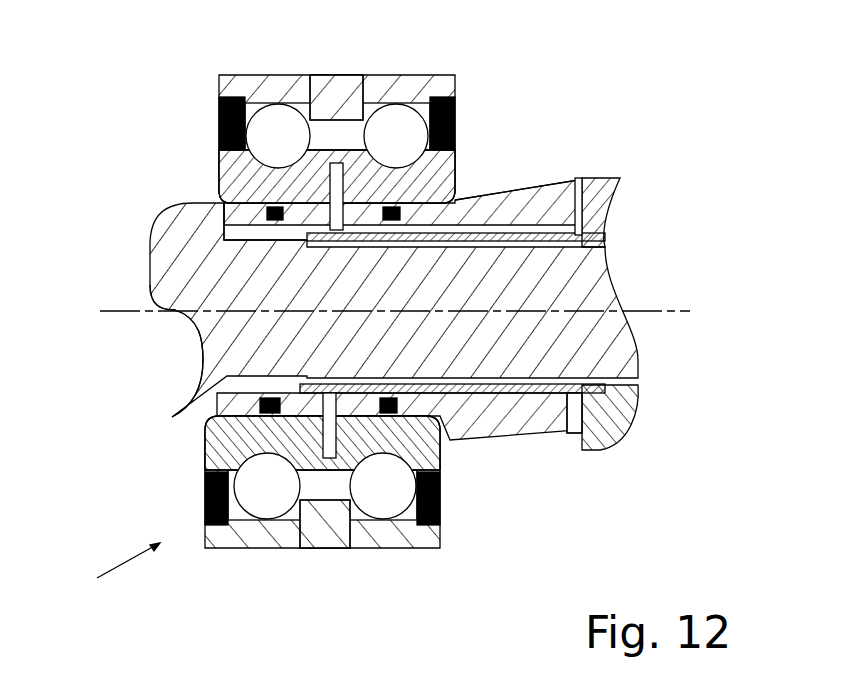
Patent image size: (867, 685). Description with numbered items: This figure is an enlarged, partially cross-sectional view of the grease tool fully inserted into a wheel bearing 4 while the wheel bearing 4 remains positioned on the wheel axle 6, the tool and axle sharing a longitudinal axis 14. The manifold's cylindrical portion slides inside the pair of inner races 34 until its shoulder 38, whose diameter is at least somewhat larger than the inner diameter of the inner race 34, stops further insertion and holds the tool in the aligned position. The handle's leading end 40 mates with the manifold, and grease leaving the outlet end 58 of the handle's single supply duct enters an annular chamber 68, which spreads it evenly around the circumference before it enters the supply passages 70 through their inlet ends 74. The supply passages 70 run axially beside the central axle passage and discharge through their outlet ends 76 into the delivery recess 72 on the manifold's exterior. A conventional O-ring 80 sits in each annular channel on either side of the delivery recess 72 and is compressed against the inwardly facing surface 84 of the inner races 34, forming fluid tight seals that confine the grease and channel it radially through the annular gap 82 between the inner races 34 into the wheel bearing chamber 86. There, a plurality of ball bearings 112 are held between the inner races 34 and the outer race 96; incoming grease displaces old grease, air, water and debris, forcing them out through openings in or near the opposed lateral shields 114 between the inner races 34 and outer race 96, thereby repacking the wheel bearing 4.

The wheel bearing 4 is at (110, 571).
The wheel axle 6 is at (597, 345).
The longitudinal axis 14 is at (123, 310).
The inner race 34 is at (219, 160).
The shoulder 38 is at (460, 192).
The leading end 40 is at (617, 423).
The outlet end 58 is at (607, 215).
The annular chamber 68 is at (587, 210).
The supply passages 70 is at (497, 393).
The delivery recess 72 is at (353, 452).
The inlet ends 74 is at (566, 400).
The outlet ends 76 is at (343, 150).
The O-ring 80 is at (445, 197).
The annular gap 82 is at (262, 208).
The inwardly facing surface 84 is at (247, 212).
The wheel bearing chamber 86 is at (323, 120).
The outer race 96 is at (417, 98).
The ball bearings 112 is at (263, 127).
The lateral shields 114 is at (219, 107).